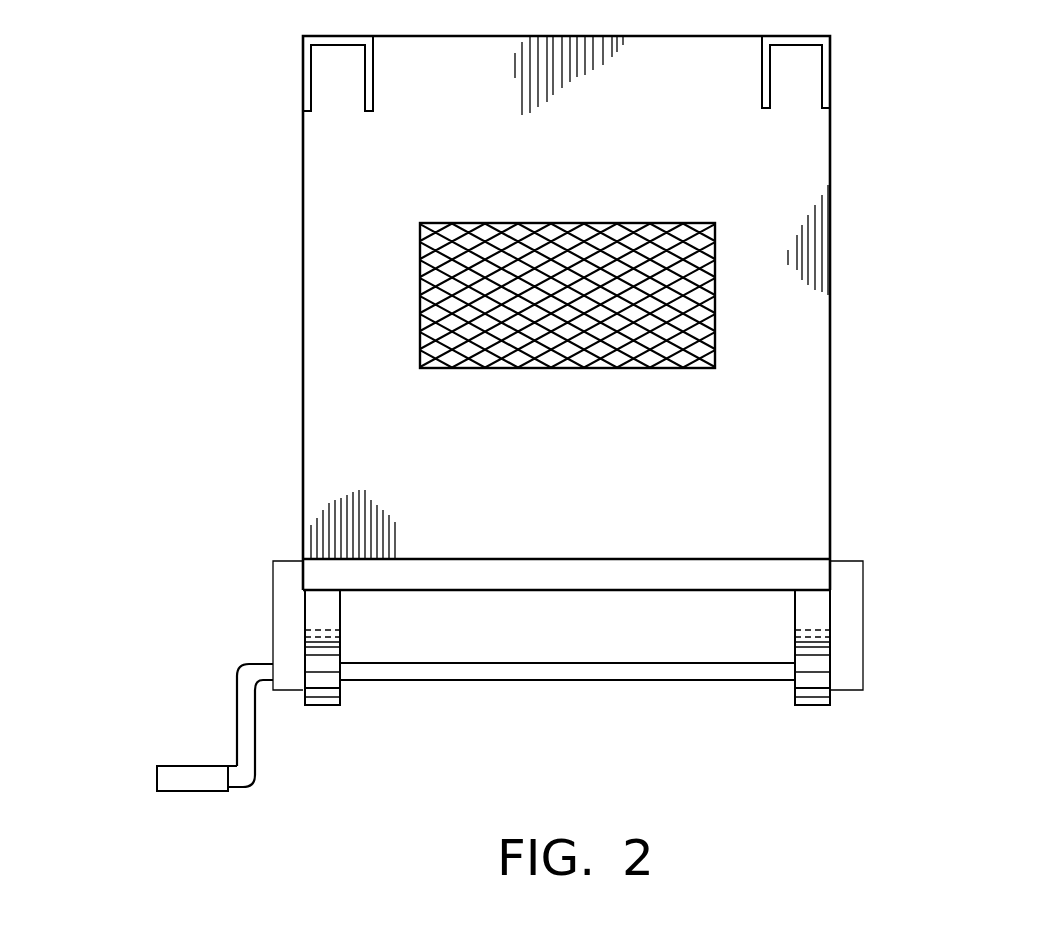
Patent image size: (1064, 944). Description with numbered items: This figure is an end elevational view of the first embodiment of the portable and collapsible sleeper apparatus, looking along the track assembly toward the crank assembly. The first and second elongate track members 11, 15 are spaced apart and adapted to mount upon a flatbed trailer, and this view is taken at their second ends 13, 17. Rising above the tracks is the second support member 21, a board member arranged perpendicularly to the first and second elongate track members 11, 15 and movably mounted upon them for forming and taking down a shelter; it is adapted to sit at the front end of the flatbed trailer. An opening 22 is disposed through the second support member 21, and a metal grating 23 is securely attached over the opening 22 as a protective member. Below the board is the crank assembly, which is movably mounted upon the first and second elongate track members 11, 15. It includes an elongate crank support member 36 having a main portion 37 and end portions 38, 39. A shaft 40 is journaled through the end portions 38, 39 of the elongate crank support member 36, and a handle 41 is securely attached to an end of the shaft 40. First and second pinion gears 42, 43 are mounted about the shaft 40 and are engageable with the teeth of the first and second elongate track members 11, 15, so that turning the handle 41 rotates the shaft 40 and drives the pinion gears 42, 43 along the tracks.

The first elongate track member 11 is at (337, 613).
The second end of first elongate track member 13 is at (328, 593).
The second elongate track member 15 is at (802, 617).
The second end of second elongate track member 17 is at (822, 600).
The second support member 21 is at (323, 282).
The opening 22 is at (727, 360).
The metal grating 23 is at (687, 287).
The elongate crank support member 36 is at (285, 572).
The main portion 37 is at (546, 575).
The end portion 38 is at (275, 623).
The end portion 39 is at (850, 623).
The shaft 40 is at (602, 682).
The handle 41 is at (247, 717).
The first pinion gear 42 is at (322, 690).
The second pinion gear 43 is at (810, 690).